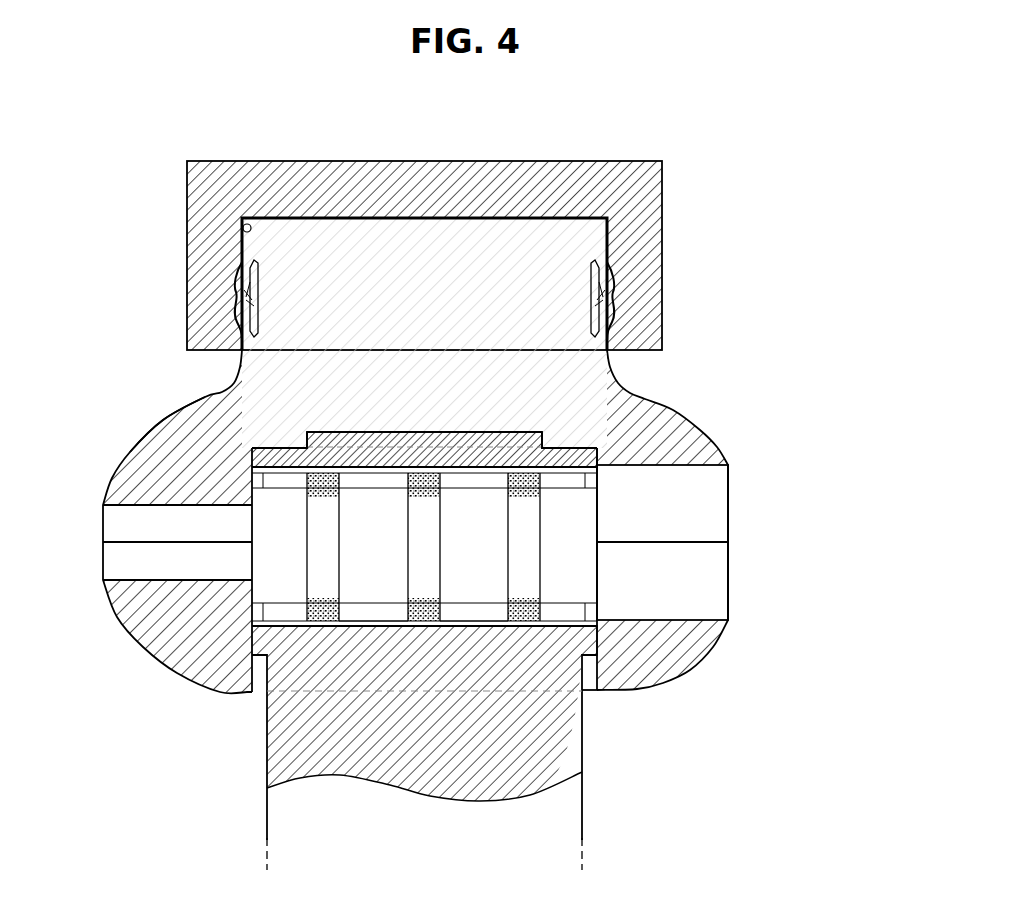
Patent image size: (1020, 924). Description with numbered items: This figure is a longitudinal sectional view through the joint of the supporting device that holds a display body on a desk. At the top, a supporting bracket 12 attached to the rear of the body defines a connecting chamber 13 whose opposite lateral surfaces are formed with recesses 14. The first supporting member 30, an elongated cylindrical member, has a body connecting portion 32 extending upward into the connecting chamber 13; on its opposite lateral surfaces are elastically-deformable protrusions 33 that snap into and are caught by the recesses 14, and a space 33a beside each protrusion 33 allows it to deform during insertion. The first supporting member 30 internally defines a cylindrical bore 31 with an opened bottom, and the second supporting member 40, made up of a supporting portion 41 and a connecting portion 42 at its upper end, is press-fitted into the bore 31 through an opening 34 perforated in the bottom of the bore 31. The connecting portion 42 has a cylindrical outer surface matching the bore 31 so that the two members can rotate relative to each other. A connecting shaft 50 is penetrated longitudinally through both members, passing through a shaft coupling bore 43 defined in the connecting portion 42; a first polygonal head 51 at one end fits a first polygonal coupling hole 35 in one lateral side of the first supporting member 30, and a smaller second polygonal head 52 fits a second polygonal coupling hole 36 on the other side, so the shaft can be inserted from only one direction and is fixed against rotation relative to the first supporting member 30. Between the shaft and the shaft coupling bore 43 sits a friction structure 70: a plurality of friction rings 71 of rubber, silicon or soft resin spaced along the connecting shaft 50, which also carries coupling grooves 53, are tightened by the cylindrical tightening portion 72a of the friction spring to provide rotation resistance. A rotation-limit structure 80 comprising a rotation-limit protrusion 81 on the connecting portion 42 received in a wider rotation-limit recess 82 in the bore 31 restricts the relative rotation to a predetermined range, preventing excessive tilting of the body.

The supporting bracket 12 is at (637, 237).
The connecting chamber 13 is at (242, 220).
The recesses 14 is at (238, 292).
The first supporting member 30 is at (143, 464).
The bore 31 is at (130, 428).
The body connecting portion 32 is at (380, 243).
The protrusions 33 is at (236, 310).
The space 33a is at (252, 288).
The opening 34 is at (590, 695).
The first polygonal coupling hole 35 is at (663, 467).
The second polygonal coupling hole 36 is at (127, 514).
The second supporting member 40 is at (267, 812).
The supporting portion 41 is at (280, 763).
The connecting portion 42 is at (568, 460).
The shaft coupling bore 43 is at (400, 620).
The connecting shaft 50 is at (748, 587).
The first polygonal head 51 is at (708, 516).
The second polygonal head 52 is at (125, 566).
The coupling grooves 53 is at (308, 576).
The friction structure 70 is at (448, 623).
The friction rings 71 is at (252, 458).
The tightening portion 72a is at (600, 640).
The rotation-limit structure 80 is at (540, 428).
The rotation-limit protrusion 81 is at (308, 445).
The rotation-limit recess 82 is at (340, 436).